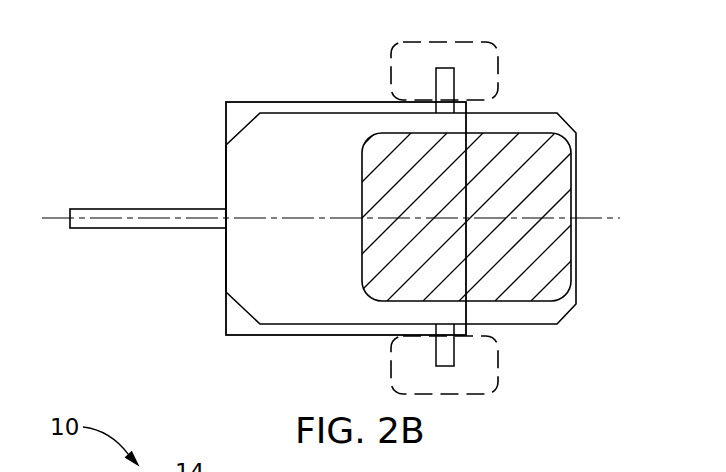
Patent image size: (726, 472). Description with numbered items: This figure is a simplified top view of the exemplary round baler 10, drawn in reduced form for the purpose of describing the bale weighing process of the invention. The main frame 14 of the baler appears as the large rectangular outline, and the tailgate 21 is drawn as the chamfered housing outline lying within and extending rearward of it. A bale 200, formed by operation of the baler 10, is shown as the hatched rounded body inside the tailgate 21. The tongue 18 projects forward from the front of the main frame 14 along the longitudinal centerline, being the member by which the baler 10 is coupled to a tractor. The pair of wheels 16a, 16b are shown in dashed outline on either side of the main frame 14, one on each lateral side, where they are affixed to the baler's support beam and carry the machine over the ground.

The round baler 10 is at (156, 81).
The main frame 14 is at (293, 100).
The wheel 16a is at (498, 381).
The wheel 16b is at (498, 62).
The tongue 18 is at (105, 208).
The tailgate 21 is at (556, 112).
The bale 200 is at (553, 183).